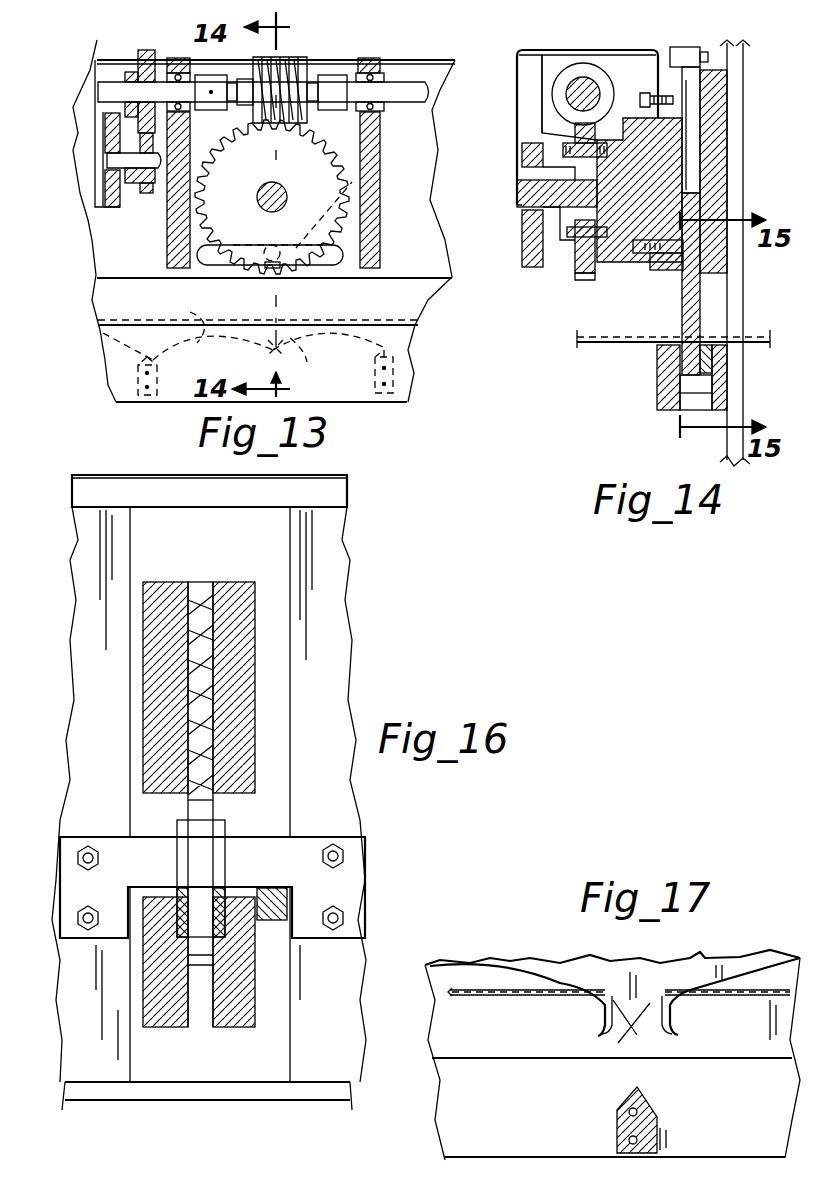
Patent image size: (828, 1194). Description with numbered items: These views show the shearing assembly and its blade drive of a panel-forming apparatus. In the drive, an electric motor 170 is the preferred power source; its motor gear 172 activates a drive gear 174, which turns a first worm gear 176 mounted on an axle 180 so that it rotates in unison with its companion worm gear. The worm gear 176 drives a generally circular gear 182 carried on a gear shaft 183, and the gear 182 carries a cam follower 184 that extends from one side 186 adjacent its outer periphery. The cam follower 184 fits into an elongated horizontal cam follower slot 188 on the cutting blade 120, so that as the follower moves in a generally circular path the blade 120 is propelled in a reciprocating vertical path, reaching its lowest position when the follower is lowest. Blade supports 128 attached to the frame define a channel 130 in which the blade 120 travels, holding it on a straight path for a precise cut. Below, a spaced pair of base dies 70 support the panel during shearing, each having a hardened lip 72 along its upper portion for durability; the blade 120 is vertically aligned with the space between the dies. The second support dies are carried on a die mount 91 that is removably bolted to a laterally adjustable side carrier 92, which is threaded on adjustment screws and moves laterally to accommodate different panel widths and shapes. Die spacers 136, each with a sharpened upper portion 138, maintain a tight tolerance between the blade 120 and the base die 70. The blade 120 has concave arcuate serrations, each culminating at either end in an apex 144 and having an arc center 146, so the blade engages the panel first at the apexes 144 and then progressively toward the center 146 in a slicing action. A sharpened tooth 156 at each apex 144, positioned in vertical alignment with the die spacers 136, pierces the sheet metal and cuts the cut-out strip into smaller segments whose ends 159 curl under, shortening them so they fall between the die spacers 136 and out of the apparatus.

In FIG. 14, the base die 70 is at (702, 397).
In FIG. 16, the base die 70 is at (240, 992).
In FIG. 14, the hardened lip 72 is at (727, 350).
In FIG. 16, the hardened lip 72 is at (223, 910).
In FIG. 16, the die mount 91 is at (350, 847).
In FIG. 16, the laterally adjustable side carrier 92 is at (323, 640).
In FIG. 14, the cutting blade 120 is at (695, 200).
In FIG. 16, the cutting blade 120 is at (200, 697).
In FIG. 17, the cutting blade 120 is at (557, 965).
In FIG. 14, the blade support 128 is at (735, 98).
In FIG. 14, the channel 130 is at (692, 72).
In FIG. 16, the channel 130 is at (195, 600).
In FIG. 13, the die spacer 136 is at (397, 373).
In FIG. 17, the die spacer 136 is at (660, 1124).
In FIG. 13, the sharpened upper portion 138 is at (373, 347).
In FIG. 17, the sharpened upper portion 138 is at (643, 1085).
In FIG. 13, the apex 144 is at (272, 355).
In FIG. 17, the apex 144 is at (640, 1012).
In FIG. 13, the arc center 146 is at (197, 316).
In FIG. 13, the sharpened tooth 156 is at (305, 360).
In FIG. 17, the sharpened tooth 156 is at (633, 1017).
In FIG. 17, the strip segment end 159 is at (610, 1022).
In FIG. 13, the electric motor 170 is at (92, 75).
In FIG. 13, the motor gear 172 is at (138, 193).
In FIG. 13, the drive gear 174 is at (155, 50).
In FIG. 13, the first worm gear 176 is at (295, 63).
In FIG. 14, the first worm gear 176 is at (570, 75).
In FIG. 13, the axle 180 is at (405, 90).
In FIG. 14, the axle 180 is at (588, 82).
In FIG. 13, the circular gear 182 is at (302, 142).
In FIG. 14, the circular gear 182 is at (580, 137).
In FIG. 14, the gear shaft 183 is at (520, 257).
In FIG. 13, the cam follower 184 is at (352, 182).
In FIG. 14, the cam follower 184 is at (682, 263).
In FIG. 14, the gear side 186 is at (690, 135).
In FIG. 13, the cam follower slot 188 is at (340, 252).
In FIG. 14, the cam follower slot 188 is at (698, 242).